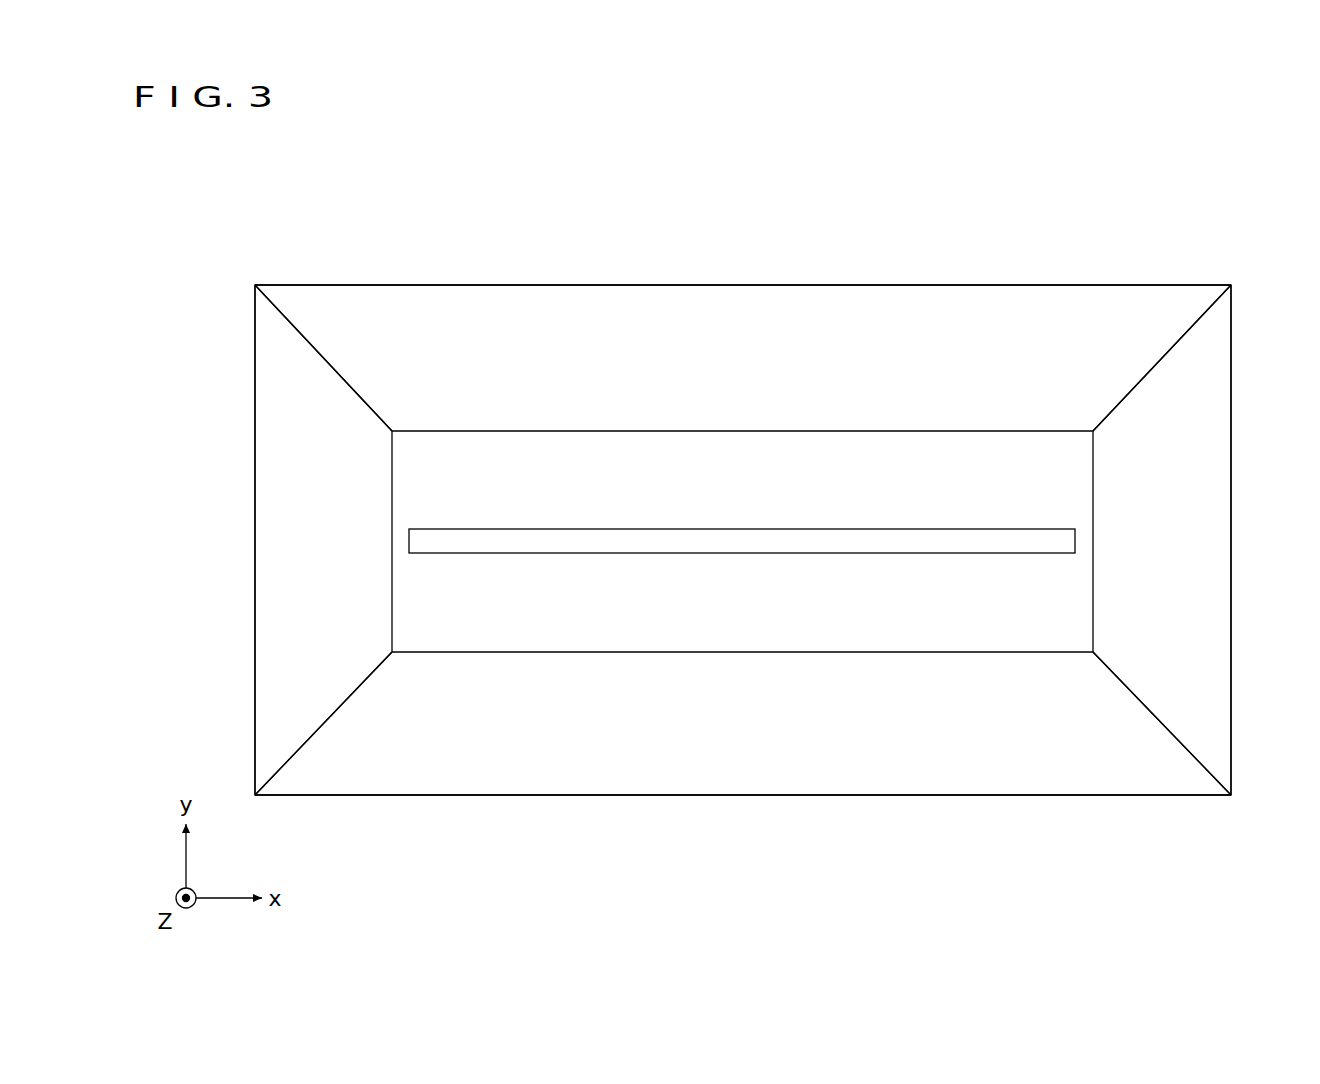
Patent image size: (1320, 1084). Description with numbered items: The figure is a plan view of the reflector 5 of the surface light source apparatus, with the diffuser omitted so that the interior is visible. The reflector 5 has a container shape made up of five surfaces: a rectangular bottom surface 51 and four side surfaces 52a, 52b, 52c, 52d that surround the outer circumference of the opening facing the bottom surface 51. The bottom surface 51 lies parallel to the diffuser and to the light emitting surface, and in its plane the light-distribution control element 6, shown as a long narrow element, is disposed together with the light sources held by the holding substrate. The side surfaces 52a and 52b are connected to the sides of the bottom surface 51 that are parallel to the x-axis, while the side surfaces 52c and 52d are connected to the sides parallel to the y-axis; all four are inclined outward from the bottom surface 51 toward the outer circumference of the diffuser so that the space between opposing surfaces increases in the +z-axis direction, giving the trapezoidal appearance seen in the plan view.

The reflector 5 is at (283, 233).
The bottom surface 51 is at (408, 598).
The side surface 52a is at (524, 298).
The side surface 52b is at (575, 780).
The side surface 52c is at (268, 480).
The side surface 52d is at (1210, 530).
The light-distribution control element 6 is at (905, 529).